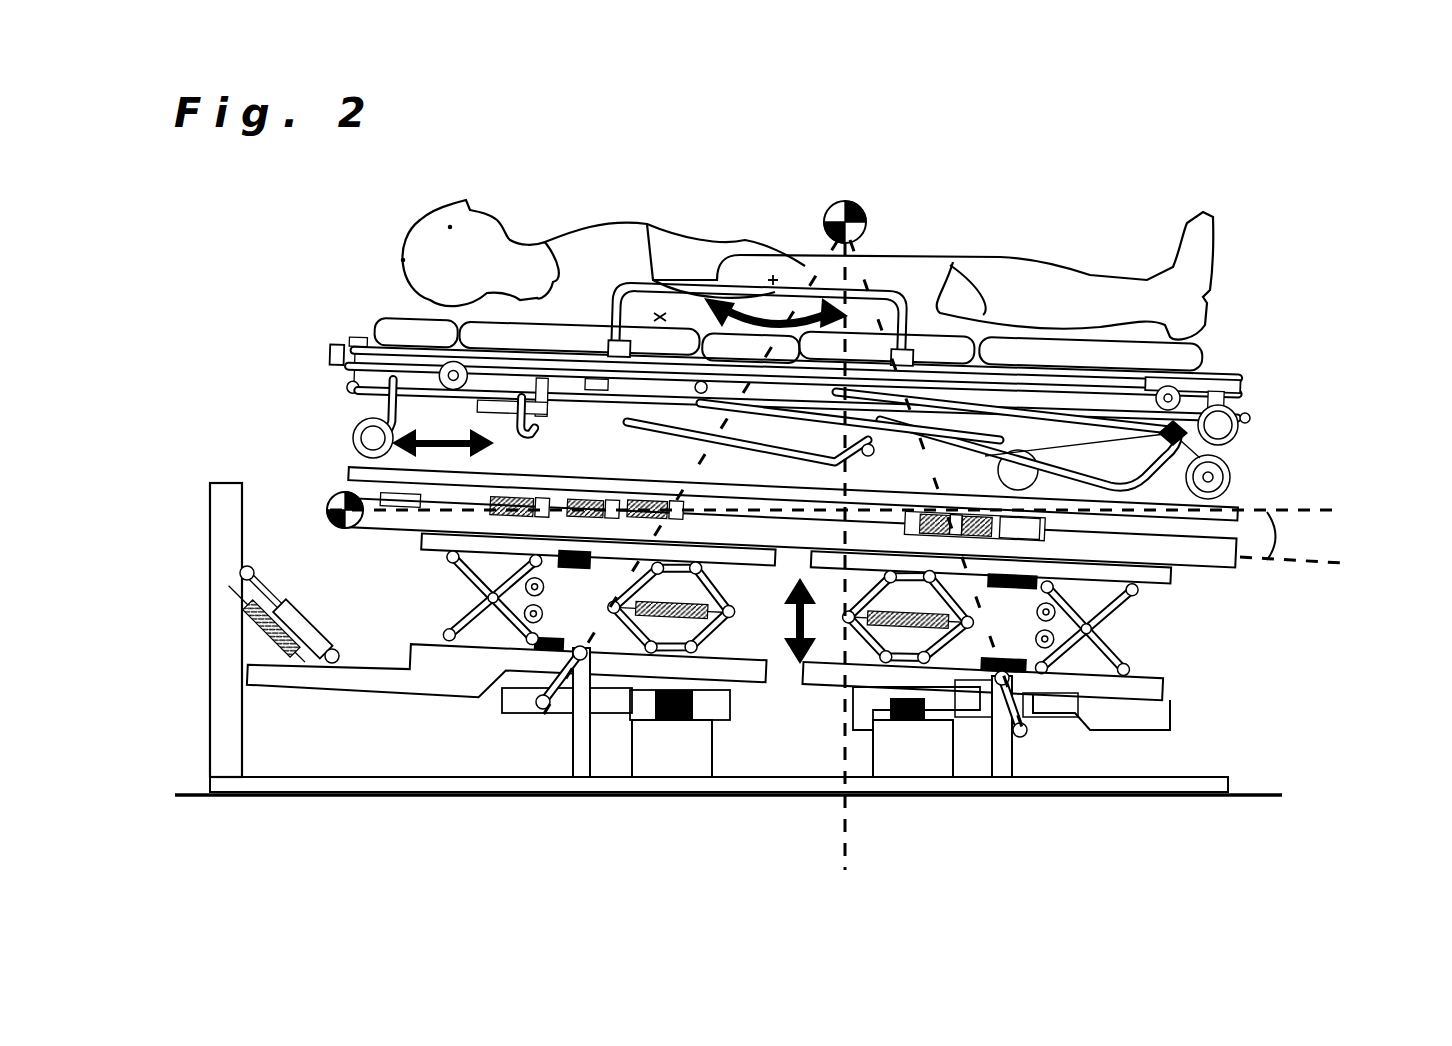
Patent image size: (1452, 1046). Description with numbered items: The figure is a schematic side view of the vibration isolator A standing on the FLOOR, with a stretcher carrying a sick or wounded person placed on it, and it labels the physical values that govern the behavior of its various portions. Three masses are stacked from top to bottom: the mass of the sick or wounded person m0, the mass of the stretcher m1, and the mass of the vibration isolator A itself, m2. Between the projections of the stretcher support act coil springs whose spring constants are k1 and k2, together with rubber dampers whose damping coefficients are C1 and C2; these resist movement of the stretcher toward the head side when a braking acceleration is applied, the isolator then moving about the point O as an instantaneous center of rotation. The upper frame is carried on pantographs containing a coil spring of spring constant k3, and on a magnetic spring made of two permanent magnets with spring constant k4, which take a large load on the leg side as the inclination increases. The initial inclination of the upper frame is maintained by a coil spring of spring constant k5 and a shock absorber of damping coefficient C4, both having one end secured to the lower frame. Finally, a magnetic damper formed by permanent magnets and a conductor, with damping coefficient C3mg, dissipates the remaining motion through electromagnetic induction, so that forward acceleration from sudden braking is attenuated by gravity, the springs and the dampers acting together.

The damping coefficient of the rubber damper C1 is at (791, 340).
The damping coefficient of the rubber damper C2 is at (791, 340).
The spring constant of the coil spring k1 is at (791, 340).
The spring constant of the coil spring k2 is at (791, 340).
The point O is at (783, 519).
The vibration isolator A is at (736, 340).
The damping coefficient of the shock absorber C4 is at (302, 611).
The spring constant of the coil spring k5 is at (262, 648).
The spring constant of the magnetic spring k4 is at (1013, 597).
The spring constant of the coil spring k3 is at (907, 633).
The damping coefficient of the magnetic damper C3mg is at (668, 722).
The mass of a sick or wounded person m0 is at (1353, 248).
The mass of a stretcher m1 is at (823, 340).
The mass of the vibration isolator m2 is at (783, 708).
The floor FLOOR is at (1195, 800).